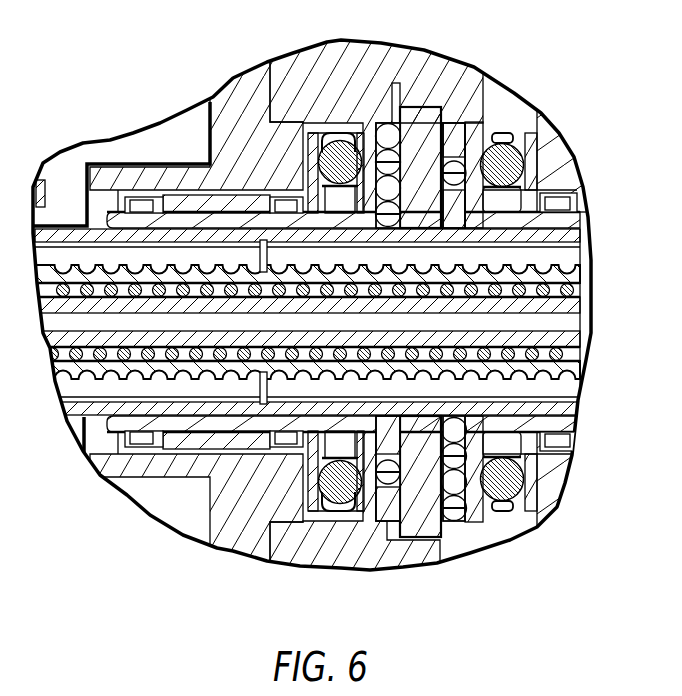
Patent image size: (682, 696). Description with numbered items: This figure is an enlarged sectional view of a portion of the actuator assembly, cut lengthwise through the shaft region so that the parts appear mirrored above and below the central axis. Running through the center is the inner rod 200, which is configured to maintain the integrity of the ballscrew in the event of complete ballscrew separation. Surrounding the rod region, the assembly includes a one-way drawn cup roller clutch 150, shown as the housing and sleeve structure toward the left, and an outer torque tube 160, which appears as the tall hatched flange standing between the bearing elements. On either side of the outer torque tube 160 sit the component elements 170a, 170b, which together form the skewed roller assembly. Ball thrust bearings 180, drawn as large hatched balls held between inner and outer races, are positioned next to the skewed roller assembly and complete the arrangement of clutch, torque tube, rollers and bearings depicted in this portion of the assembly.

The one-way drawn cup roller clutch 150 is at (192, 205).
The outer torque tube 160 is at (419, 132).
The skewed roller assembly component 170a is at (453, 210).
The skewed roller assembly component 170b is at (386, 433).
The ball thrust bearings 180 is at (340, 160).
The inner rod 200 is at (578, 305).